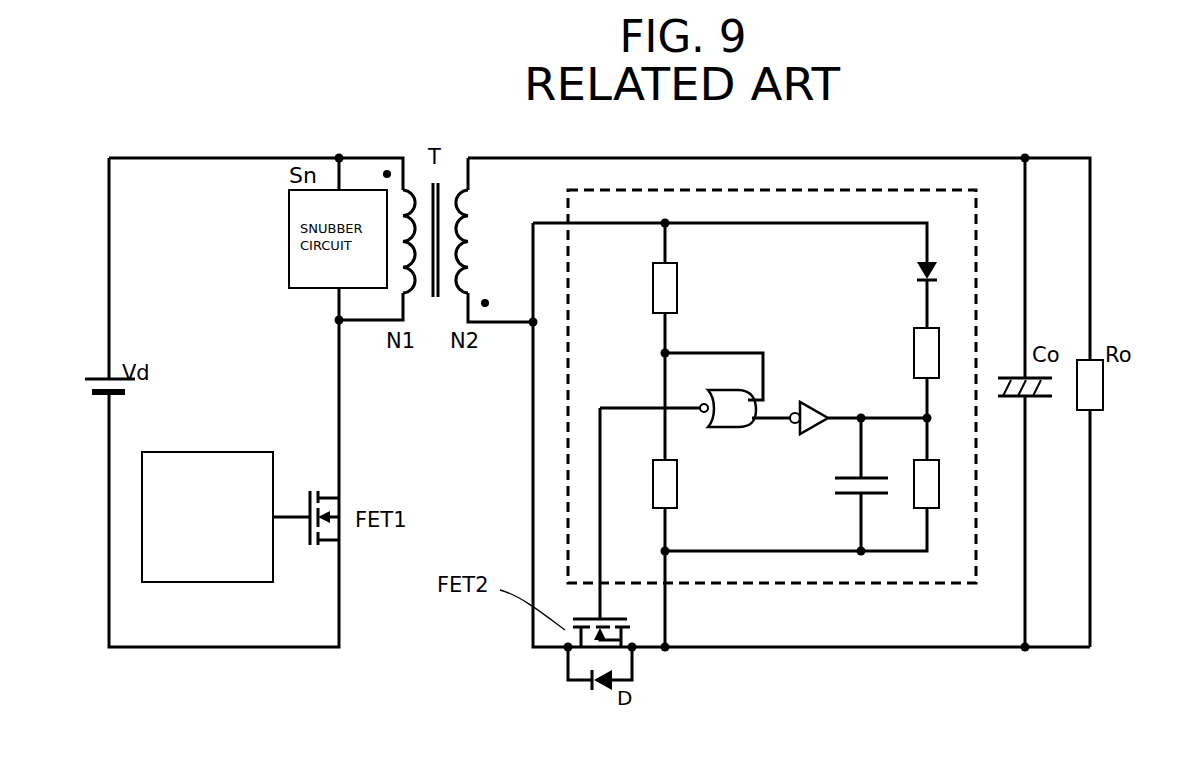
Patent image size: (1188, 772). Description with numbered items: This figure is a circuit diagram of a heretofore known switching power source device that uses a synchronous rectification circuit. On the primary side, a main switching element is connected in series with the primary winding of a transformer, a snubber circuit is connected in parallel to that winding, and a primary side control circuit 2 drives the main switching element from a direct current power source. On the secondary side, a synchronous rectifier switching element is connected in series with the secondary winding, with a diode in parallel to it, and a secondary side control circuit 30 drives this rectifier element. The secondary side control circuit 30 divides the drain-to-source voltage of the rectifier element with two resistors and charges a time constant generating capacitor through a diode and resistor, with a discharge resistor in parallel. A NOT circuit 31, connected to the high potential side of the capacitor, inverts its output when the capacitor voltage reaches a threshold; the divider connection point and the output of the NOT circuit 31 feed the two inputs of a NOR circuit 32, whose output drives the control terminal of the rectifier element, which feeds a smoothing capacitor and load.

The primary side control circuit 2 is at (273, 452).
The secondary side control circuit 30 is at (808, 450).
The NOT circuit 31 is at (848, 382).
The NOR circuit 32 is at (738, 428).